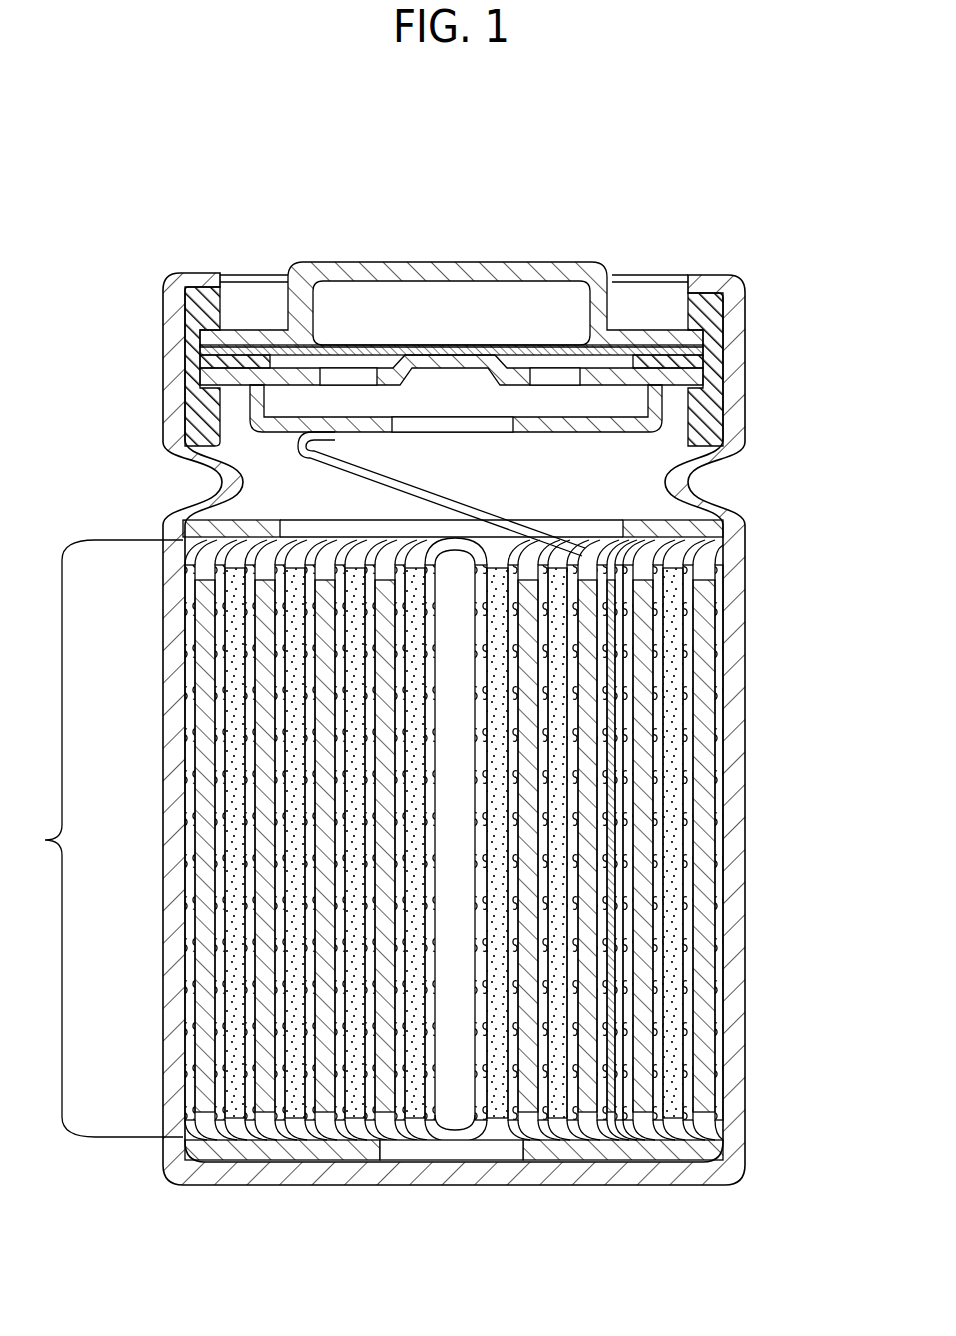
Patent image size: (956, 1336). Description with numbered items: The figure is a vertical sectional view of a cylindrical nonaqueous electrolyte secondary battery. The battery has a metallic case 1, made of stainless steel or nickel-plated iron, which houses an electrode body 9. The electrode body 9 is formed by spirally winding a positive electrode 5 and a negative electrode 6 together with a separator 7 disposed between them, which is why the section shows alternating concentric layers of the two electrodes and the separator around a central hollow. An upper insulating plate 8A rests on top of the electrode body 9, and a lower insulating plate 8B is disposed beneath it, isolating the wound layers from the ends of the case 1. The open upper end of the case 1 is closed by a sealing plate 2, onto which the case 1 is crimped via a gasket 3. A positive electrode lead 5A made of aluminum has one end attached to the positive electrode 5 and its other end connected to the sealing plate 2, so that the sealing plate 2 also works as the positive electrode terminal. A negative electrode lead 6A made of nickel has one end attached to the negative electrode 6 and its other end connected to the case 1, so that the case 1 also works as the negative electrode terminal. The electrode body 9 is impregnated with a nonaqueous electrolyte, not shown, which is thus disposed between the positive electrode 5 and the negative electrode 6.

The case 1 is at (165, 705).
The sealing plate 2 is at (362, 262).
The gasket 3 is at (703, 348).
The positive electrode 5 is at (675, 932).
The positive electrode lead 5A is at (483, 510).
The negative electrode 6 is at (705, 875).
The negative electrode lead 6A is at (508, 1162).
The separator 7 is at (735, 762).
The upper insulating plate 8A is at (700, 532).
The lower insulating plate 8B is at (725, 1147).
The electrode body 9 is at (414, 840).